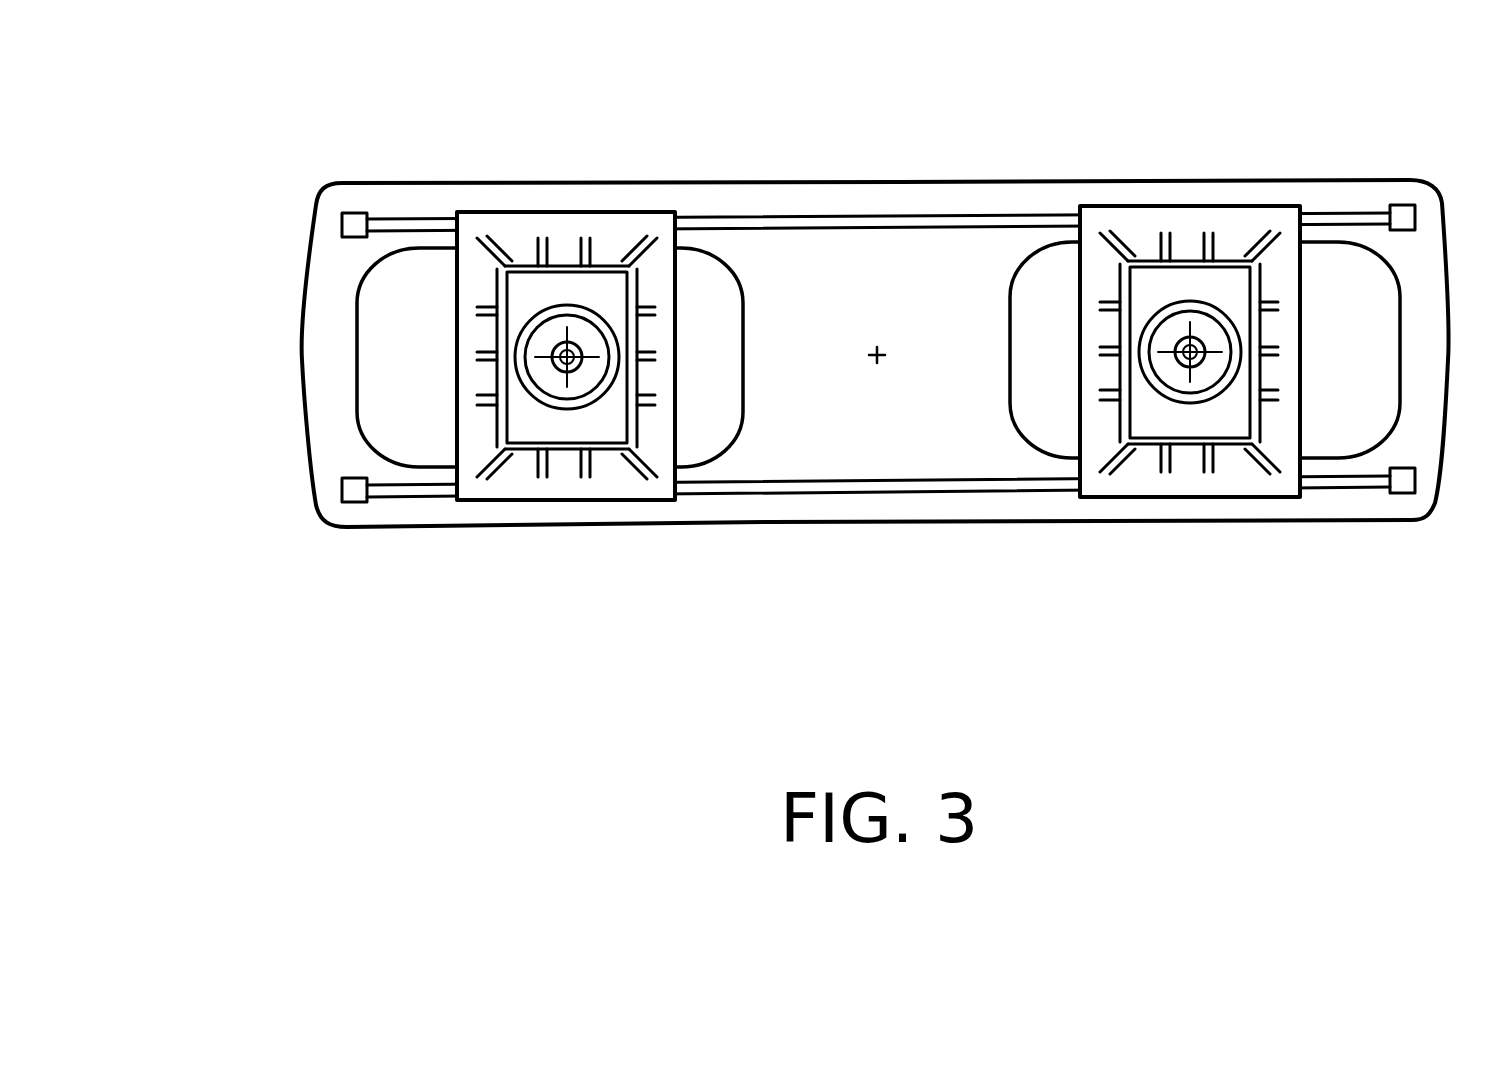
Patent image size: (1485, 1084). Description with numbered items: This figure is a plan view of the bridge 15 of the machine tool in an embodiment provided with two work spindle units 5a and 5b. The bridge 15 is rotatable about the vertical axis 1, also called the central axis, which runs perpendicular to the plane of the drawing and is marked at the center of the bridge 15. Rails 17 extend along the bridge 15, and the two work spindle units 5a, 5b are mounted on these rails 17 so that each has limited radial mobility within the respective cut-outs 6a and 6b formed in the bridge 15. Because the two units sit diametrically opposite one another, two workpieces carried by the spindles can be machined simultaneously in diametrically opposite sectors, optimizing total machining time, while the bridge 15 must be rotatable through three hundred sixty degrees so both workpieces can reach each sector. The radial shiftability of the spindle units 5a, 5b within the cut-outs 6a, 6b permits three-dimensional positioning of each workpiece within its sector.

The vertical axis 1 is at (878, 350).
The work spindle unit 5a is at (622, 230).
The work spindle unit 5b is at (1257, 218).
The cut-out 6a is at (725, 387).
The cut-out 6b is at (1027, 387).
The bridge 15 is at (320, 448).
The rails 17 is at (410, 221).